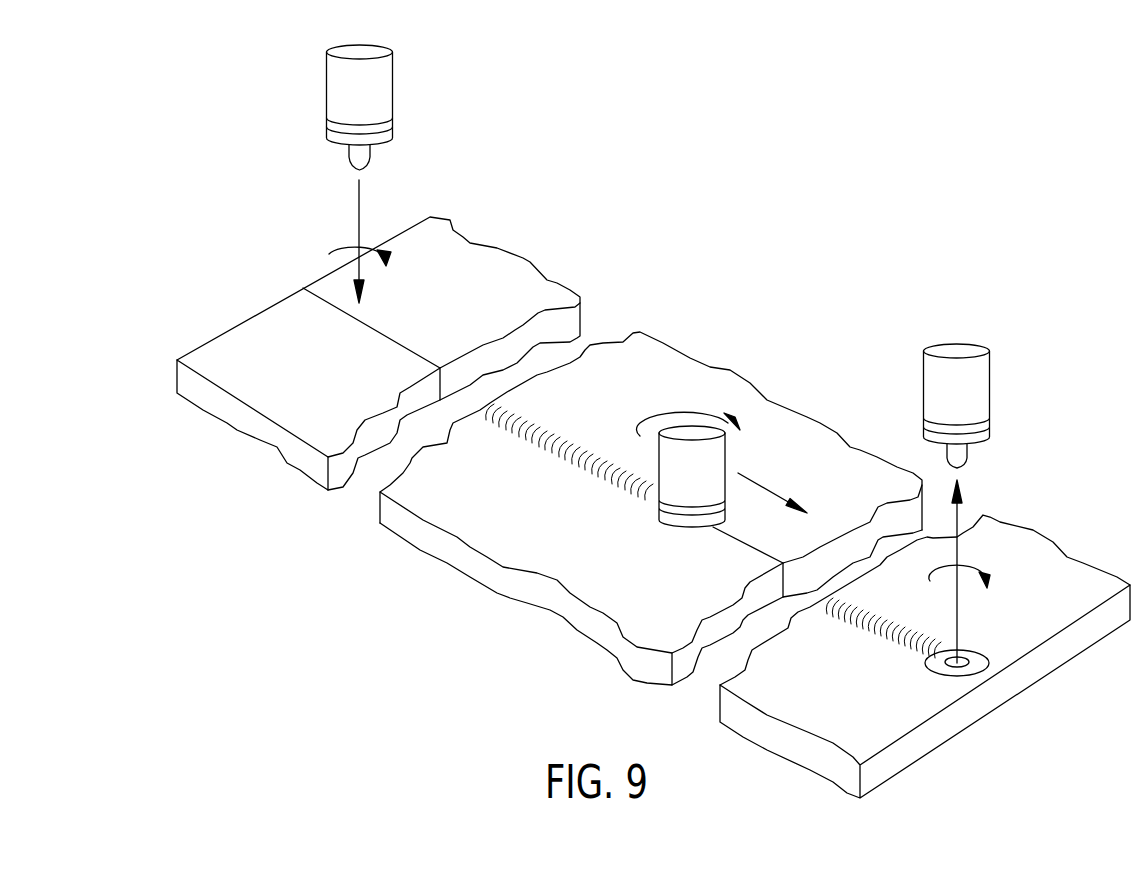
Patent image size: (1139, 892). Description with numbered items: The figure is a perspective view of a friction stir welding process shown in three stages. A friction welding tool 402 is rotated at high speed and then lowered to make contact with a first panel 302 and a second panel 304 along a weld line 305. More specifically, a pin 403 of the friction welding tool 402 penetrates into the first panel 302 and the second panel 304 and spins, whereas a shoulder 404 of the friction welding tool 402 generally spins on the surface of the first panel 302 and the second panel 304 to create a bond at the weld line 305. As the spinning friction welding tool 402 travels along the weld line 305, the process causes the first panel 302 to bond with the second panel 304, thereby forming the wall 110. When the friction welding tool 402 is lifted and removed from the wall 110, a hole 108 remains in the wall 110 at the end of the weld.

The hole 108 is at (963, 670).
The wall 110 is at (792, 432).
The first panel 302 is at (378, 344).
The second panel 304 is at (227, 343).
The weld line 305 is at (400, 340).
The friction welding tool 402 is at (659, 354).
The pin 403 is at (367, 158).
The shoulder 404 is at (380, 135).